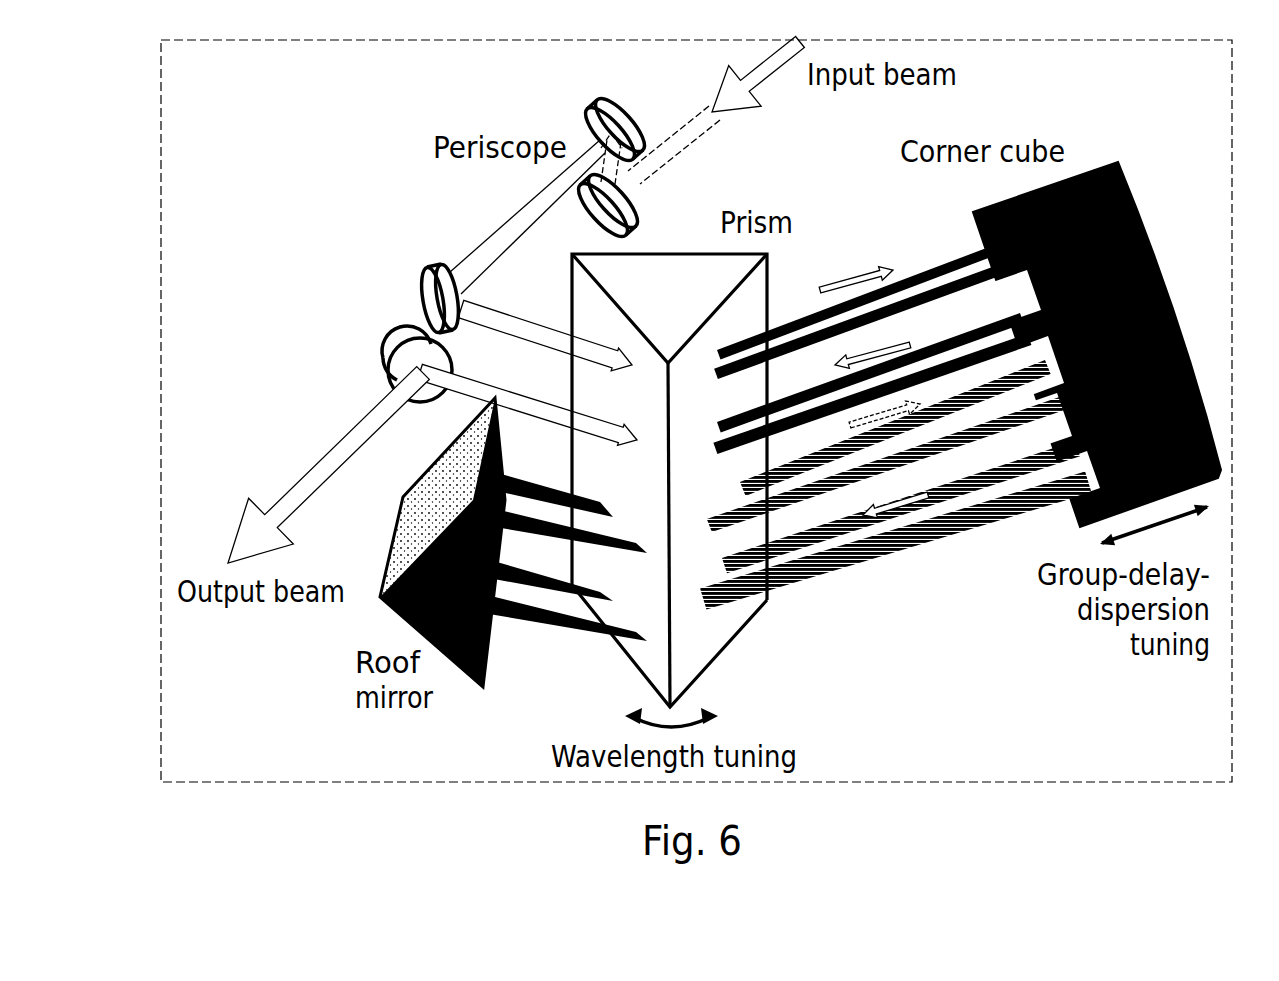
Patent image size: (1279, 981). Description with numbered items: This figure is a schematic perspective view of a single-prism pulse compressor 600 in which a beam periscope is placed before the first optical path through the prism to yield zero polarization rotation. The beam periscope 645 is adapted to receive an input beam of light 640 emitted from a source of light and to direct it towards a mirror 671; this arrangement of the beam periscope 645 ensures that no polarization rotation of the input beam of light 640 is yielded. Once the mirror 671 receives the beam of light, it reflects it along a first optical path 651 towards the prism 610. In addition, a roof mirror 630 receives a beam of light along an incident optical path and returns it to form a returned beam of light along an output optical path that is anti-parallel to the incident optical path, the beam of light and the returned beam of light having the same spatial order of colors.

The pulse compressor 600 is at (278, 100).
The input beam of light 640 is at (697, 117).
The beam periscope 645 is at (551, 130).
The mirror 671 is at (433, 266).
The first optical path 651 is at (545, 335).
The prism 610 is at (682, 275).
The roof mirror 630 is at (494, 620).